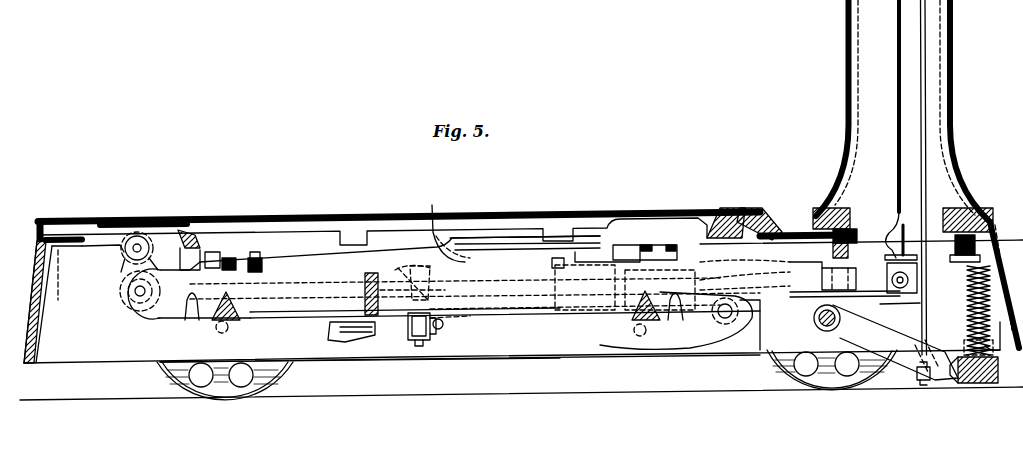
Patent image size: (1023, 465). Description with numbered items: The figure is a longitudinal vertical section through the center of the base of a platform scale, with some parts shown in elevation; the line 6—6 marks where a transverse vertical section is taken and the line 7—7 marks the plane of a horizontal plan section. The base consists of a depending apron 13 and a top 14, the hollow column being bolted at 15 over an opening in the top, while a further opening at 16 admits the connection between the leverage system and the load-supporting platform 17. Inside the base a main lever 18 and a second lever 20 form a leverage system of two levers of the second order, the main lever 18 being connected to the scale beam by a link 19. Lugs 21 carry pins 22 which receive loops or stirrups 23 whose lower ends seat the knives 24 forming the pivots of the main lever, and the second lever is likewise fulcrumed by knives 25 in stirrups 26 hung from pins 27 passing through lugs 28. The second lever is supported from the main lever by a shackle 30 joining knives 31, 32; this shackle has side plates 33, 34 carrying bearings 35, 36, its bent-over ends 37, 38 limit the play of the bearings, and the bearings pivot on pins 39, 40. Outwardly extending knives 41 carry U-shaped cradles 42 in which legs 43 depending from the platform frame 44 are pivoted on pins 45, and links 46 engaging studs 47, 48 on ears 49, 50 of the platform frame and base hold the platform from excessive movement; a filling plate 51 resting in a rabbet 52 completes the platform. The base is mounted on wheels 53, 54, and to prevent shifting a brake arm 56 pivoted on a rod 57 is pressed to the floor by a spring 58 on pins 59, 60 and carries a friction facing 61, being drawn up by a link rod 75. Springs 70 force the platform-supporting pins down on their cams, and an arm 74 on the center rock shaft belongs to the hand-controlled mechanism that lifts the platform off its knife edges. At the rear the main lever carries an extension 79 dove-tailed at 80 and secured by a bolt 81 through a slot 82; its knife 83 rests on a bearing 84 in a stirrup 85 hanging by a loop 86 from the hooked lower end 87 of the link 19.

The section line 6— 6 is at (571, 212).
The section line 7— 7 is at (40, 232).
The depending apron 13 is at (53, 302).
The top 14 is at (70, 247).
The bolt connection 15 is at (981, 220).
The opening 16 is at (100, 247).
The load-supporting platform 17 is at (78, 218).
The main lever 18 is at (307, 285).
The link 19 is at (905, 33).
The second lever 20 is at (518, 338).
The lugs 21 is at (148, 256).
The pins 22 is at (138, 236).
The loops or stirrups 23 is at (188, 248).
The knives 24 is at (138, 298).
The knives 25 is at (746, 324).
The stirrups or loops 26 is at (760, 268).
The pins 27 is at (745, 280).
The lugs 28 is at (743, 252).
The shackle or link 30 is at (402, 330).
The knife 31 is at (445, 290).
The knife 32 is at (461, 320).
The side plate 33 is at (407, 280).
The side plate 34 is at (470, 257).
The bearing 35 is at (398, 303).
The bearing 36 is at (413, 340).
The bent end of side plates 37 is at (420, 288).
The bent end of side plates 38 is at (428, 338).
The pin 39 is at (366, 288).
The pin 40 is at (432, 326).
The knives 41 is at (192, 318).
The U-shaped cradles 42 is at (234, 258).
The legs 43 is at (204, 255).
The platform frame 44 is at (741, 210).
The pins 45 is at (157, 320).
The links 46 is at (577, 252).
The stud 47 is at (525, 239).
The stud 48 is at (663, 250).
The ear 49 is at (445, 223).
The ear 50 is at (760, 228).
The filling plate 51 is at (371, 213).
The rabbet or recess 52 is at (110, 221).
The wheel 53 is at (832, 391).
The wheel 54 is at (222, 400).
The arm 56 is at (907, 354).
The rod 57 is at (813, 317).
The spring 58 is at (984, 290).
The pin 59 is at (975, 260).
The pin 60 is at (973, 336).
The friction facing 61 is at (987, 383).
The springs 70 is at (268, 262).
The arm 74 is at (582, 263).
The link rod 75 is at (927, 103).
The extension 79 is at (868, 284).
The dove-tailing 80 is at (832, 287).
The bolt 81 is at (857, 225).
The longitudinal slot 82 is at (833, 270).
The knife 83 is at (902, 290).
The bearing 84 is at (908, 301).
The stirrup 85 is at (919, 268).
The loop 86 is at (925, 227).
The hooked lower end 87 is at (895, 220).